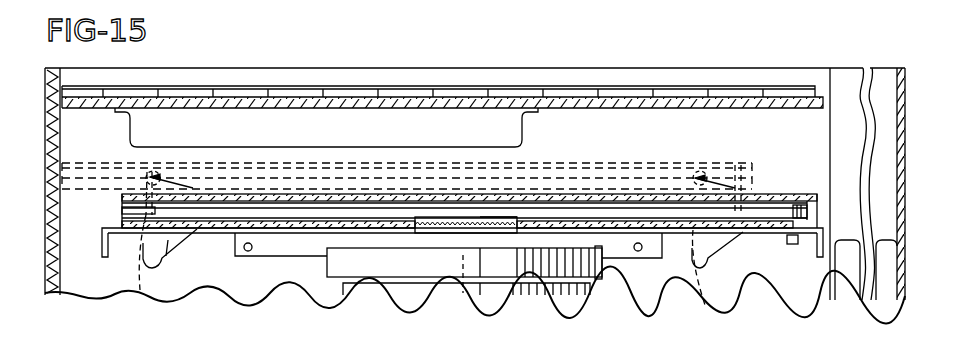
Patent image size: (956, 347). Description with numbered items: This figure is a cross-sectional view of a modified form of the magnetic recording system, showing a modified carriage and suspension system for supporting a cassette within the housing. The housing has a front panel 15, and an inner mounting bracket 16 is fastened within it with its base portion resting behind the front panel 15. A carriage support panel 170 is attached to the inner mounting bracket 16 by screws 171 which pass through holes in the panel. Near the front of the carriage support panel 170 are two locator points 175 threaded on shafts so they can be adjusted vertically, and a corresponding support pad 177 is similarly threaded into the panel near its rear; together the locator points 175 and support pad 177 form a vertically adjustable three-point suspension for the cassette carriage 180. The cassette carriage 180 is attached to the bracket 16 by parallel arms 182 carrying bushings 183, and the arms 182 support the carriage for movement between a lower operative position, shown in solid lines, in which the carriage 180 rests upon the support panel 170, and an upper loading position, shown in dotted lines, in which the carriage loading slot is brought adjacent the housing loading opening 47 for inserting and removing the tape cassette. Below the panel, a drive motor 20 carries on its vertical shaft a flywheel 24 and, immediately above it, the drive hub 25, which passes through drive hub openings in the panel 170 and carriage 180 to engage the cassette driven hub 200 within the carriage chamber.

The front panel 15 is at (47, 294).
The inner mounting bracket 16 is at (773, 275).
The housing loading opening 47 is at (62, 172).
The cassette carriage 180 is at (790, 194).
The locator points 175 is at (147, 212).
The carriage support panel 170 is at (213, 230).
The drive hub 25 is at (428, 228).
The cassette driven hub 200 is at (492, 224).
The screws 171 is at (248, 251).
The flywheel 24 is at (330, 268).
The drive motor 20 is at (353, 287).
The parallel arms 182 is at (167, 268).
The support pad 177 is at (803, 240).
The bushings 183 is at (445, 346).